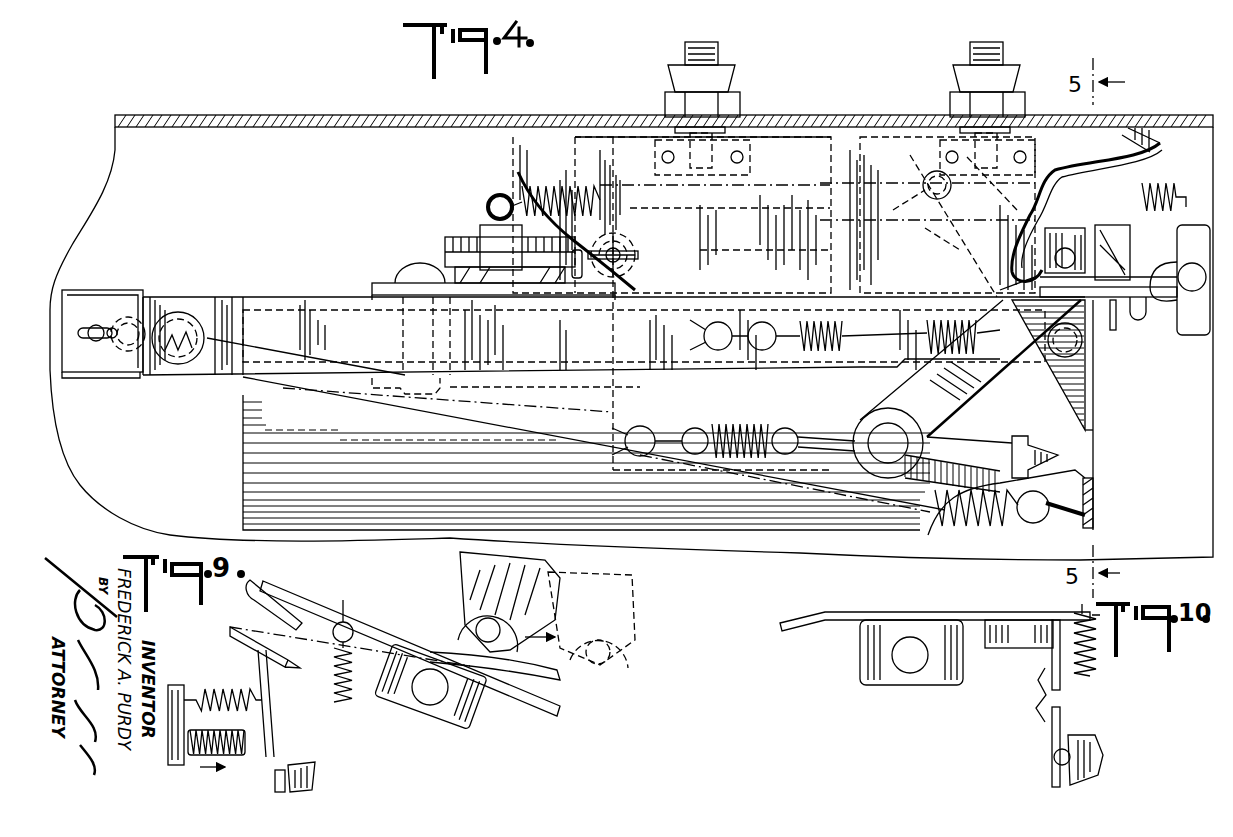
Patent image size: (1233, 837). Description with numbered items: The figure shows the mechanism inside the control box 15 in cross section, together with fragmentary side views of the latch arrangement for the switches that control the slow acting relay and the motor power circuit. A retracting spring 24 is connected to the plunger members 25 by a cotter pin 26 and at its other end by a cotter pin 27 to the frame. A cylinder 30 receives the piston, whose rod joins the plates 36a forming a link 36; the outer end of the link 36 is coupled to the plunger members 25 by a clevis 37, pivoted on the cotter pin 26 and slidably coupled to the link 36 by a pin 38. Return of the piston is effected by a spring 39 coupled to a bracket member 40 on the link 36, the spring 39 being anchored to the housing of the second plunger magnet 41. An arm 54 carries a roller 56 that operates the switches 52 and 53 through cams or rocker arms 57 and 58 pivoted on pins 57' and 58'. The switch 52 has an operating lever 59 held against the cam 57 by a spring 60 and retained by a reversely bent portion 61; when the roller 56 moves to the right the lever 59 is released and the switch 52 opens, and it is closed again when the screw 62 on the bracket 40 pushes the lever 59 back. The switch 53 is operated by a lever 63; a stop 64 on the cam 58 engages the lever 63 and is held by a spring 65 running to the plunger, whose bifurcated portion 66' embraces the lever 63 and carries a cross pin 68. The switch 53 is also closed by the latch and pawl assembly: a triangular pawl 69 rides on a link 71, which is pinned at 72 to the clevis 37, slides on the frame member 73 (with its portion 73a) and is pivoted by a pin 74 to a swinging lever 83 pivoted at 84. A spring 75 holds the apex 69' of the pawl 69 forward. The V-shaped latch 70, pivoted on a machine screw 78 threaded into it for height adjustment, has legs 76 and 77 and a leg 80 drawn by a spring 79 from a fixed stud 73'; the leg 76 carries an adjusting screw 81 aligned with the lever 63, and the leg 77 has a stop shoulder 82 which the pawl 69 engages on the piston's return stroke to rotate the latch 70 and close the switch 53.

In FIG. 4, the control box 15 is at (598, 113).
In FIG. 4, the pin 57' is at (721, 105).
In FIG. 4, the pin 58' is at (1003, 105).
In FIG. 10, the pin 58' is at (911, 629).
In FIG. 4, the cam or rocker arm 57 is at (672, 303).
In FIG. 9, the cam or rocker arm 57 is at (410, 662).
In FIG. 4, the cam or rocker arm 58 is at (927, 217).
In FIG. 10, the cam or rocker arm 58 is at (935, 603).
In FIG. 4, the pivot 84 is at (928, 182).
In FIG. 4, the positioning member or swinging arm 83 is at (925, 228).
In FIG. 4, the link 36 is at (386, 282).
In FIG. 4, the plates 36a is at (375, 284).
In FIG. 4, the screw 62 is at (445, 246).
In FIG. 9, the screw 62 is at (195, 756).
In FIG. 4, the bracket member 40 is at (485, 218).
In FIG. 9, the bracket member 40 is at (185, 688).
In FIG. 4, the spring 39 is at (548, 190).
In FIG. 9, the spring 39 is at (242, 696).
In FIG. 4, the operating lever 59 is at (578, 300).
In FIG. 9, the operating lever 59 is at (272, 712).
In FIG. 4, the spring 60 is at (636, 256).
In FIG. 4, the second plunger magnet 41 is at (1192, 224).
In FIG. 4, the adjusting screw 81 is at (1090, 228).
In FIG. 4, the bifurcated plunger portion 66' is at (1112, 272).
In FIG. 4, the lever 63 is at (1125, 258).
In FIG. 10, the lever 63 is at (1052, 735).
In FIG. 4, the cross pin 68 is at (1118, 315).
In FIG. 4, the pin 74 is at (1090, 348).
In FIG. 4, the pawl 69 is at (1071, 365).
In FIG. 4, the apex 69' is at (1107, 415).
In FIG. 4, the link or retractor 71 is at (358, 344).
In FIG. 4, the cylinder 30 is at (612, 336).
In FIG. 4, the pin 38 is at (414, 396).
In FIG. 4, the plunger members 25 is at (100, 380).
In FIG. 4, the clevis 37 is at (86, 300).
In FIG. 4, the cotter pin 26 is at (126, 318).
In FIG. 4, the pin 72 is at (190, 314).
In FIG. 4, the frame member 73 is at (586, 462).
In FIG. 4, the plate flange 73a is at (1095, 502).
In FIG. 4, the fixed stud 73' is at (647, 463).
In FIG. 4, the retracting spring 24 is at (205, 372).
In FIG. 4, the cotter pin 27 is at (1060, 520).
In FIG. 4, the latch 70 is at (952, 430).
In FIG. 4, the leg 76 is at (977, 393).
In FIG. 4, the pivot 78 is at (890, 440).
In FIG. 4, the leg 80 is at (830, 432).
In FIG. 4, the stop shoulder 82 is at (1000, 441).
In FIG. 4, the leg 77 is at (1022, 463).
In FIG. 4, the spring 75 is at (815, 352).
In FIG. 4, the spring 79 is at (730, 462).
In FIG. 9, the reversely bent portion 61 is at (283, 588).
In FIG. 9, the switch 52 is at (305, 768).
In FIG. 9, the arm 54 is at (480, 572).
In FIG. 9, the roller 56 is at (460, 625).
In FIG. 10, the stop 64 is at (1020, 624).
In FIG. 10, the spring 65 is at (1100, 660).
In FIG. 10, the control switch 53 is at (1058, 752).